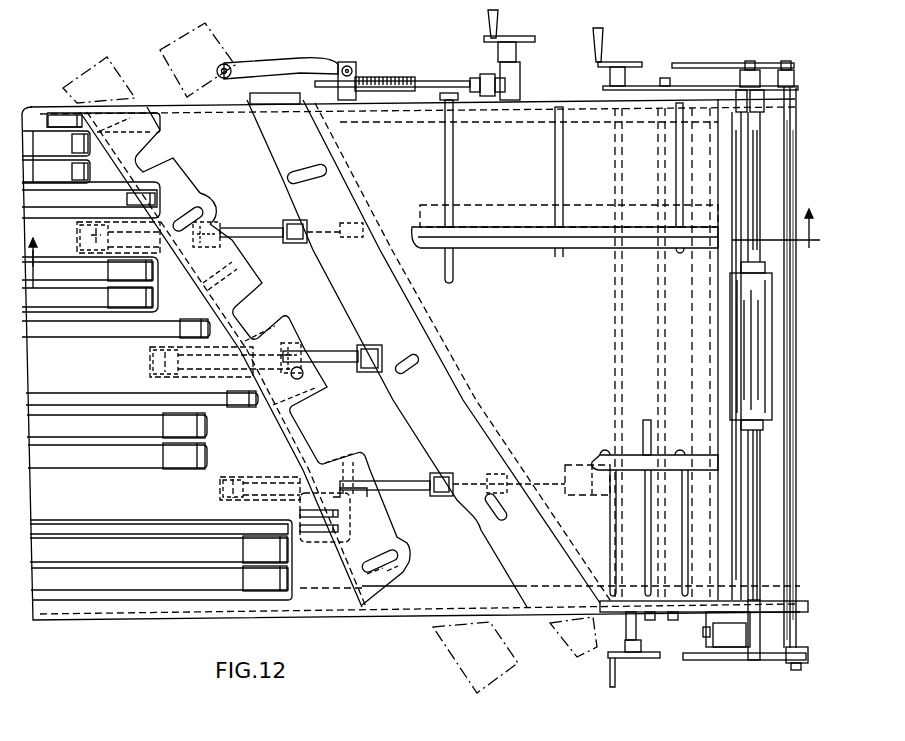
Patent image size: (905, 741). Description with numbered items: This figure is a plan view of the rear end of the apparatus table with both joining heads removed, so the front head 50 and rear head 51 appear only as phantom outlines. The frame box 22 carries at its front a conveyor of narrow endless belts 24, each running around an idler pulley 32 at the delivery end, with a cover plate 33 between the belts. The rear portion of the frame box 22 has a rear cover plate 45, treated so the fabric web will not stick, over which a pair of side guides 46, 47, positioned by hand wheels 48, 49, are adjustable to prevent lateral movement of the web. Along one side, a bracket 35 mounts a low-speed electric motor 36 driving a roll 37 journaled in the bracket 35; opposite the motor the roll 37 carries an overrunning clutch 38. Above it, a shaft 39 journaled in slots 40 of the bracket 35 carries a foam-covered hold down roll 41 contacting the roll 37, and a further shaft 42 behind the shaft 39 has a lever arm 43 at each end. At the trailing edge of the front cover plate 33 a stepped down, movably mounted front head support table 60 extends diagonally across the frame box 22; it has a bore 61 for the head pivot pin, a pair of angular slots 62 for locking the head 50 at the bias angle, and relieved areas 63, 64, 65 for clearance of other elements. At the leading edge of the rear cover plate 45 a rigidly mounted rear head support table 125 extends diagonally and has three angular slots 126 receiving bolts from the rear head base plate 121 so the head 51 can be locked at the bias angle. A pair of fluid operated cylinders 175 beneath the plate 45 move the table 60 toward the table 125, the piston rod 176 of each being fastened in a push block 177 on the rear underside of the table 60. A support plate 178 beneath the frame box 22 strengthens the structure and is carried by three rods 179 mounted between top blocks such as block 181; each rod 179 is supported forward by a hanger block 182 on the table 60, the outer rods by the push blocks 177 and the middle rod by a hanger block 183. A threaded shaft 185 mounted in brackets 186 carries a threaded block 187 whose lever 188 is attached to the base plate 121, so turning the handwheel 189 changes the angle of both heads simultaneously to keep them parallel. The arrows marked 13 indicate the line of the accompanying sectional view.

The section line 13- 13 is at (423, 229).
The frame box 22 is at (144, 619).
The endless belts 24 is at (120, 580).
The idler pulley 32 is at (178, 469).
The cover plate 33 is at (140, 306).
The bracket 35 is at (680, 86).
The electric motor 36 is at (730, 648).
The roll 37 is at (761, 525).
The overrunning clutch 38 is at (765, 99).
The shaft 39 is at (758, 487).
The slots 40 is at (752, 61).
The hold down roll 41 is at (775, 333).
The shaft 42 is at (796, 139).
The lever arm 43 is at (715, 63).
The rear cover plate 45 is at (535, 135).
The side guide 46 is at (652, 435).
The side guide 47 is at (542, 250).
The hand wheel 48 is at (636, 658).
The hand wheel 49 is at (620, 62).
The front head 50 is at (96, 57).
The rear head 51 is at (186, 37).
The front head support table 60 is at (390, 532).
The bore 61 is at (306, 375).
The angular slots 62 is at (205, 203).
The relieved area 63 is at (307, 438).
The relieved area 64 is at (150, 160).
The relieved area 65 is at (260, 311).
The base plate 121 is at (212, 48).
The rear head support table 125 is at (430, 424).
The angular slots 126 is at (328, 173).
The fluid operated cylinders 175 is at (506, 205).
The piston rod 176 is at (257, 229).
The push block 177 is at (226, 213).
The support plate 178 is at (434, 590).
The rods 179 is at (323, 360).
The top block 181 is at (297, 244).
The hanger block 182 is at (208, 505).
The hanger block 183 is at (292, 347).
The threaded shaft 185 is at (408, 80).
The brackets 186 is at (484, 74).
The threaded block 187 is at (358, 76).
The lever 188 is at (303, 57).
The handwheel 189 is at (516, 36).